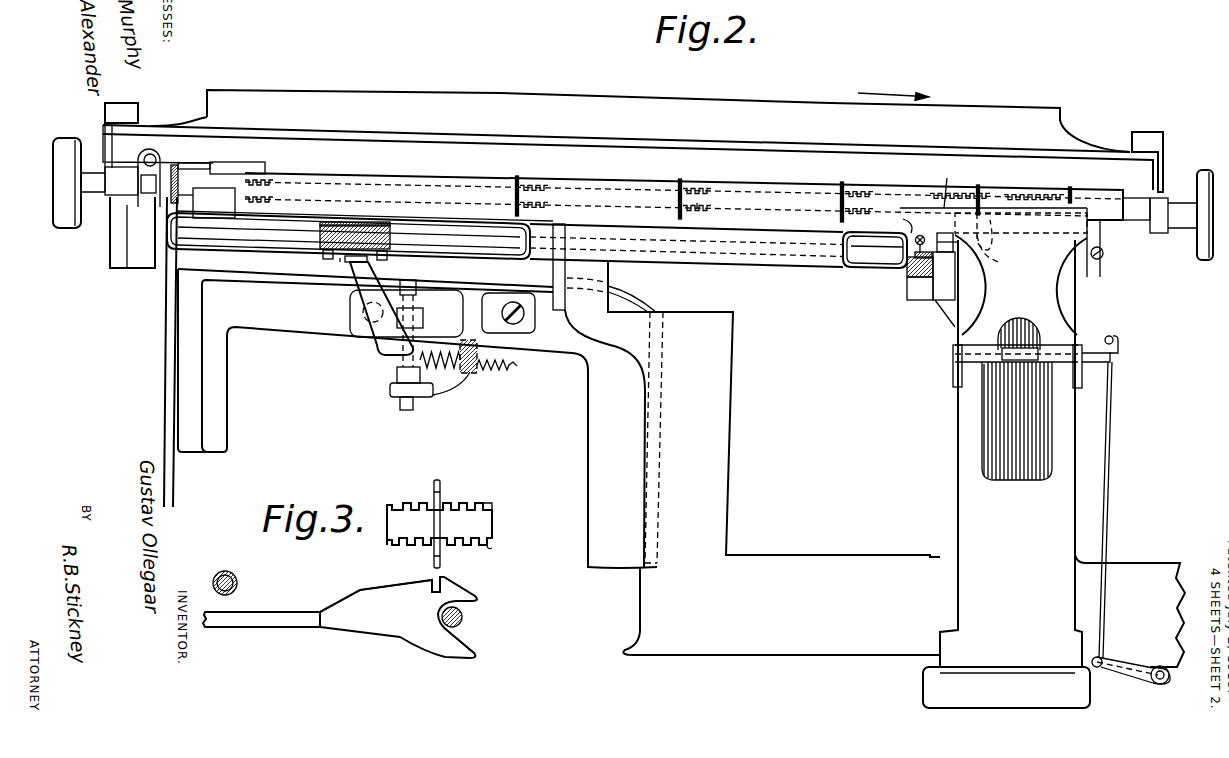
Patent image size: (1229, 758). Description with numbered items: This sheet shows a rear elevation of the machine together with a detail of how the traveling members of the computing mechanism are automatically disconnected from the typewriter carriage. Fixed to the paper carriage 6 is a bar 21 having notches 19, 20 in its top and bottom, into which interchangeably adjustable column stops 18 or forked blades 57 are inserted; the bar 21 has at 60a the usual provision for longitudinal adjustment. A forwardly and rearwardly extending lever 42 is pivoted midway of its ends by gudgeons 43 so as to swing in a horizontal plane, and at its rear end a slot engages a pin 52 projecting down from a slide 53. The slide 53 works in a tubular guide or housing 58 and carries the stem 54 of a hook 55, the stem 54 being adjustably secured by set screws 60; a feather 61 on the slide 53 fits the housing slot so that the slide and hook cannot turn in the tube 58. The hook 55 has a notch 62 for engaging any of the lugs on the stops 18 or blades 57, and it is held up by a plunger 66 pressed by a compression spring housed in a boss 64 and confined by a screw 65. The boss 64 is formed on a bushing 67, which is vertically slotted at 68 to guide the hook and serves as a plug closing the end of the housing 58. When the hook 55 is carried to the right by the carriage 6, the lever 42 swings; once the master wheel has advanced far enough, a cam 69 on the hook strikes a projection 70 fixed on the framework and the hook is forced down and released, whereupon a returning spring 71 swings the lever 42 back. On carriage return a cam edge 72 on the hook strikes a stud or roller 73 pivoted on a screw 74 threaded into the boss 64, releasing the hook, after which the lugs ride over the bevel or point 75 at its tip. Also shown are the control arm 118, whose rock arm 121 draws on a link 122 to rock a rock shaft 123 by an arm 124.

In FIG. 2, the carriage 6 is at (640, 121).
In FIG. 2, the column stops 18 is at (518, 178).
In FIG. 3, the column stops 18 is at (434, 514).
In FIG. 2, the notches 19 is at (858, 191).
In FIG. 3, the notches 19 is at (486, 506).
In FIG. 2, the notches 20 is at (840, 203).
In FIG. 3, the notches 20 is at (495, 542).
In FIG. 2, the bar 21 is at (698, 205).
In FIG. 3, the bar 21 is at (494, 527).
In FIG. 2, the lever 42 is at (374, 345).
In FIG. 2, the gudgeons 43 is at (420, 318).
In FIG. 2, the pin 52 is at (354, 264).
In FIG. 2, the slide 53 is at (350, 226).
In FIG. 2, the stem 54 is at (457, 238).
In FIG. 3, the stem 54 is at (261, 631).
In FIG. 2, the hook 55 is at (948, 182).
In FIG. 3, the hook 55 is at (396, 630).
In FIG. 3, the blades 57 is at (444, 500).
In FIG. 2, the tubular guide or housing 58 is at (780, 261).
In FIG. 2, the set screws 60 is at (326, 259).
In FIG. 2, the provision for longitudinal adjustment 60a is at (178, 168).
In FIG. 2, the feather 61 is at (338, 264).
In FIG. 2, the notch 62 is at (985, 233).
In FIG. 3, the notch 62 is at (432, 593).
In FIG. 2, the boss 64 is at (920, 293).
In FIG. 2, the screw 65 is at (908, 268).
In FIG. 2, the plunger 66 is at (943, 289).
In FIG. 2, the bushing 67 is at (877, 264).
In FIG. 2, the vertical slot 68 is at (897, 221).
In FIG. 2, the cam 69 is at (996, 263).
In FIG. 3, the cam 69 is at (477, 652).
In FIG. 2, the projection 70 is at (1104, 251).
In FIG. 3, the projection 70 is at (463, 619).
In FIG. 2, the returning spring 71 is at (491, 367).
In FIG. 2, the cam edge 72 is at (946, 243).
In FIG. 3, the cam edge 72 is at (345, 600).
In FIG. 2, the stud or roller 73 is at (926, 232).
In FIG. 3, the stud or roller 73 is at (235, 580).
In FIG. 3, the screw 74 is at (238, 586).
In FIG. 3, the bevel or point 75 is at (466, 583).
In FIG. 2, the control arm 118 is at (1006, 471).
In FIG. 2, the rock arm 121 is at (1099, 356).
In FIG. 2, the link 122 is at (1104, 444).
In FIG. 2, the rock shaft 123 is at (1158, 686).
In FIG. 2, the arm 124 is at (1130, 672).